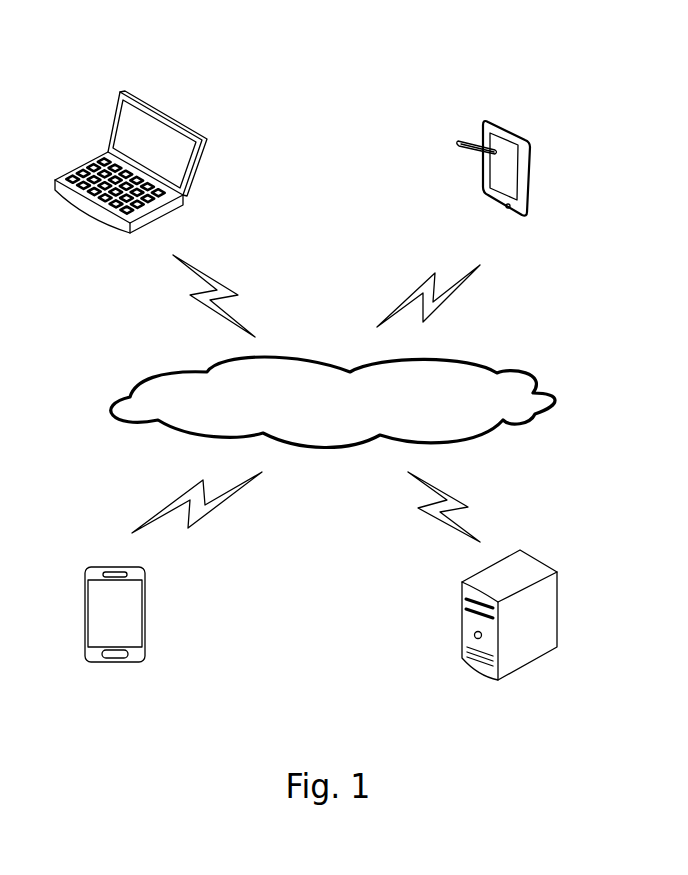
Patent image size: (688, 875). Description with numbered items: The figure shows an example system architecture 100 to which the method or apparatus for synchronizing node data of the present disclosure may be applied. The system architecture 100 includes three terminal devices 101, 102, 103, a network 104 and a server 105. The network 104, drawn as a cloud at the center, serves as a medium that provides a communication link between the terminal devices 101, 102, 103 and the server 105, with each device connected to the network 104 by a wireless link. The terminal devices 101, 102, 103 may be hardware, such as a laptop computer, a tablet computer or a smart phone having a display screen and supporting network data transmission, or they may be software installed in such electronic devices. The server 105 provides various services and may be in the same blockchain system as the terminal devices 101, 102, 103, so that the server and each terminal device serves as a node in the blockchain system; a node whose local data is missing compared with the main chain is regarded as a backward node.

The system architecture 100 is at (586, 53).
The terminal device 101 is at (131, 181).
The terminal device 102 is at (493, 186).
The terminal device 103 is at (115, 638).
The network 104 is at (333, 402).
The server 105 is at (509, 633).